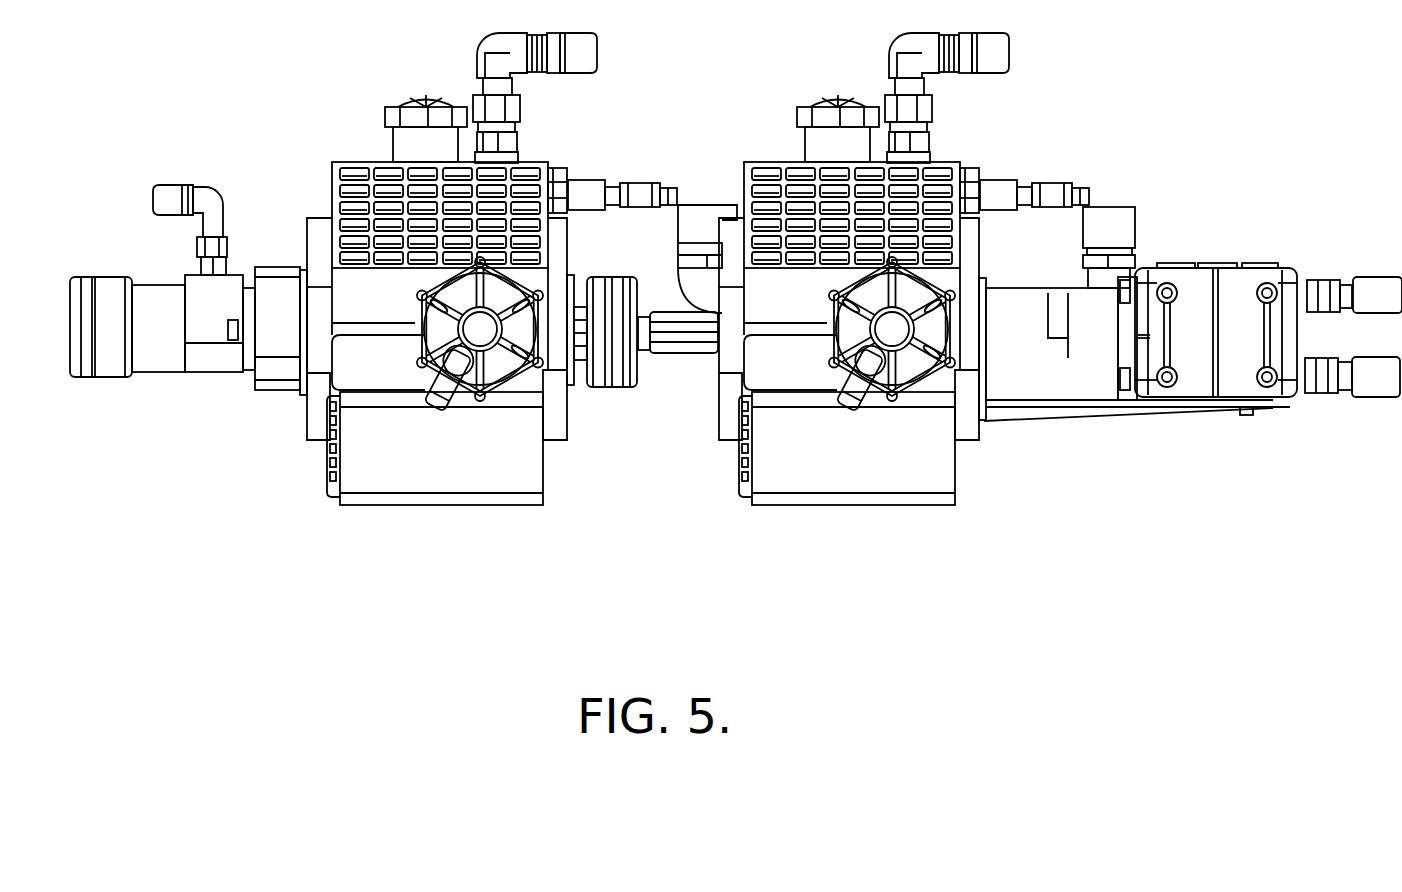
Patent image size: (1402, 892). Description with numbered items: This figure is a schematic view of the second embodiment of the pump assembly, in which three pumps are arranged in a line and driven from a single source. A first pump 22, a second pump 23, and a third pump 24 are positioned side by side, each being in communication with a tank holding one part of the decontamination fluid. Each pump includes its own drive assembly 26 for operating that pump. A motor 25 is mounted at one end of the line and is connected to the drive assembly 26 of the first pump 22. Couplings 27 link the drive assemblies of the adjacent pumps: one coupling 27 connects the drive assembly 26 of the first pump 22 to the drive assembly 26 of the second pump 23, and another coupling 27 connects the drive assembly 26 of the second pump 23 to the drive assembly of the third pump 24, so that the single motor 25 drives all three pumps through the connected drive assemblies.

The first pump 22 is at (407, 473).
The second pump 23 is at (832, 470).
The third pump 24 is at (1287, 400).
The motor 25 is at (153, 363).
The drive assembly 26 is at (583, 294).
The coupling 27 is at (612, 387).